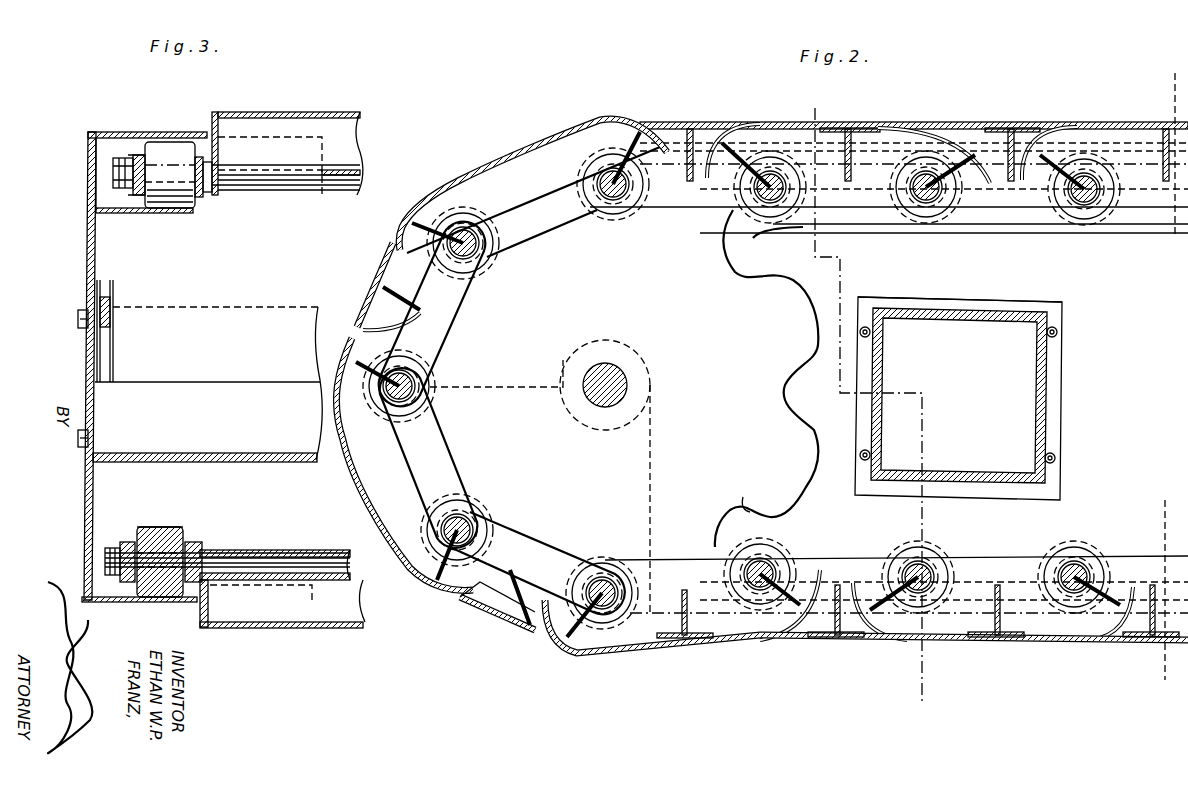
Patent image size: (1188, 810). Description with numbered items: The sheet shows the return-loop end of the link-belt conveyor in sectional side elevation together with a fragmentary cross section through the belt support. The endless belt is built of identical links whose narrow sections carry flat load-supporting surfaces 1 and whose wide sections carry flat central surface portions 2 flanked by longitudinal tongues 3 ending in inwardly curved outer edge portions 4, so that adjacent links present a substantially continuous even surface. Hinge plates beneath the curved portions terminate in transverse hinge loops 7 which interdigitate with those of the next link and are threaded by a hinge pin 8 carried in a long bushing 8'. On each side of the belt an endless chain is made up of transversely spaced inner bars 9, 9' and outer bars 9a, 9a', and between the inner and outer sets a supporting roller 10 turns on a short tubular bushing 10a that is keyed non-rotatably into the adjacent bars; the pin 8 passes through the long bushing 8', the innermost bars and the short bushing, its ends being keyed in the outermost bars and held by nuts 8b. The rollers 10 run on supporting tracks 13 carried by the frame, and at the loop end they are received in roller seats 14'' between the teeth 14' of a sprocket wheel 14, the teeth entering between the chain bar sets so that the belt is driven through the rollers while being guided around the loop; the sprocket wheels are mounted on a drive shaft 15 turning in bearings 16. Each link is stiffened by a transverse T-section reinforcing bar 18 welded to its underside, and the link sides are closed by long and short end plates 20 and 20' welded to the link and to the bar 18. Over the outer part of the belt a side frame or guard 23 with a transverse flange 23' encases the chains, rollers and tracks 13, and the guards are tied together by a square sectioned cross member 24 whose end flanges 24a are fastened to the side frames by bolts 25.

In FIG. 2, the load-supporting surface 1 is at (708, 126).
In FIG. 3, the central surface portion 2 is at (268, 112).
In FIG. 2, the central surface portion 2 is at (850, 124).
In FIG. 2, the tongue 3 is at (830, 103).
In FIG. 2, the curved outer edge portion 4 is at (950, 125).
In FIG. 3, the hinge loop 7 is at (288, 193).
In FIG. 2, the hinge loop 7 is at (593, 580).
In FIG. 3, the hinge pin 8 is at (198, 557).
In FIG. 2, the hinge pin 8 is at (738, 384).
In FIG. 3, the bushing 8' is at (245, 370).
In FIG. 2, the bushing 8' is at (615, 547).
In FIG. 3, the nut 8b is at (118, 163).
In FIG. 3, the inner chain bar 9 is at (219, 369).
In FIG. 2, the inner chain bar 9 is at (783, 378).
In FIG. 3, the inner chain bar 9' is at (221, 372).
In FIG. 2, the inner chain bar 9' is at (464, 465).
In FIG. 3, the outer chain bar 9a is at (146, 368).
In FIG. 3, the outer chain bar 9a' is at (95, 351).
In FIG. 3, the supporting roller 10 is at (168, 142).
In FIG. 2, the supporting roller 10 is at (603, 205).
In FIG. 3, the short tubular bushing 10a is at (185, 540).
In FIG. 3, the supporting track 13 is at (165, 213).
In FIG. 2, the supporting track 13 is at (897, 228).
In FIG. 2, the sprocket wheel 14 is at (767, 378).
In FIG. 2, the tooth 14' is at (811, 490).
In FIG. 2, the roller seat 14'' is at (770, 251).
In FIG. 2, the drive shaft 15 is at (650, 381).
In FIG. 3, the bearing 16 is at (330, 612).
In FIG. 3, the T-section reinforcing bar 18 is at (352, 145).
In FIG. 2, the T-section reinforcing bar 18 is at (395, 442).
In FIG. 3, the long end plate 20 is at (260, 356).
In FIG. 2, the long end plate 20 is at (865, 219).
In FIG. 2, the short end plate 20' is at (859, 550).
In FIG. 3, the side frame or guard 23 is at (66, 366).
In FIG. 3, the flange 23' is at (146, 158).
In FIG. 3, the square sectioned member 24 is at (250, 312).
In FIG. 2, the square sectioned member 24 is at (1038, 367).
In FIG. 3, the end flange 24a is at (108, 360).
In FIG. 2, the end flange 24a is at (1050, 376).
In FIG. 3, the bolt 25 is at (78, 320).
In FIG. 2, the bolt 25 is at (865, 327).